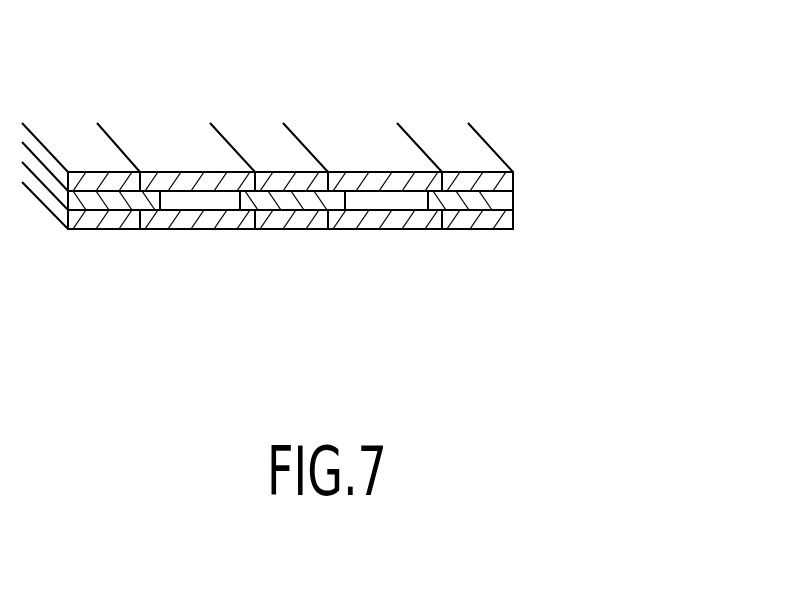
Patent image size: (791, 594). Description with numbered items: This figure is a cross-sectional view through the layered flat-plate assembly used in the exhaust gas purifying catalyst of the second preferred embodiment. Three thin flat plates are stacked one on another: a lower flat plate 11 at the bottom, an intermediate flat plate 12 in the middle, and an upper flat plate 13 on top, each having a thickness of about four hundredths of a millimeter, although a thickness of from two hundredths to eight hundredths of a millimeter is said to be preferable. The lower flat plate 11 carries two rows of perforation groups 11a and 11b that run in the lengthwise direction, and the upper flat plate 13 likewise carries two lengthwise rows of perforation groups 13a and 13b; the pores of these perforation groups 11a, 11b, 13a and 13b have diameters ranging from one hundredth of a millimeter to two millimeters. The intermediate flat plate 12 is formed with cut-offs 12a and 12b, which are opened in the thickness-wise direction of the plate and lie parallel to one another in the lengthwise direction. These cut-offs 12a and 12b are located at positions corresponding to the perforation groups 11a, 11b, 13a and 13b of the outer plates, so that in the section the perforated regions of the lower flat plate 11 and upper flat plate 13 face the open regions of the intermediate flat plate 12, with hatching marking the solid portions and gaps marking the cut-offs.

The lower flat plate 11 is at (518, 218).
The perforation group 11a is at (168, 229).
The perforation group 11b is at (392, 232).
The intermediate flat plate 12 is at (517, 201).
The cut-off 12a is at (193, 203).
The cut-off 12b is at (398, 200).
The upper flat plate 13 is at (517, 178).
The perforation group 13a is at (198, 174).
The perforation group 13b is at (377, 174).